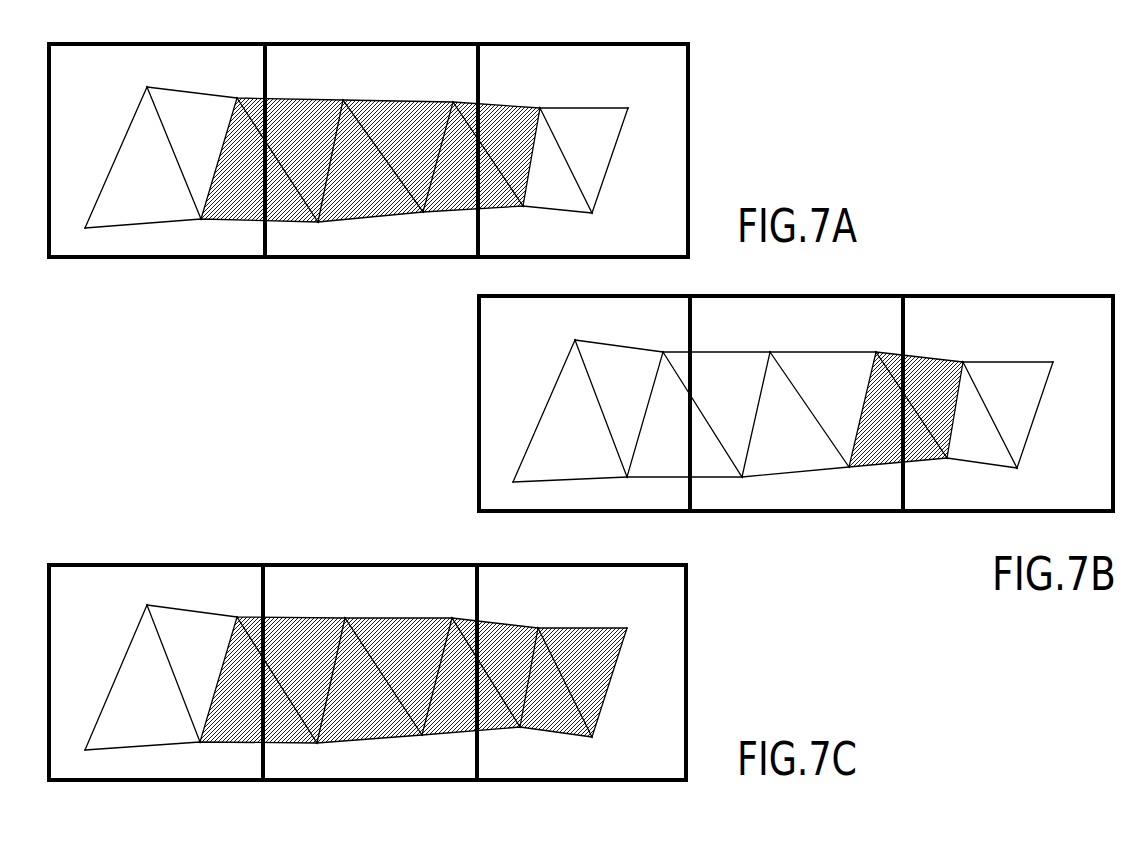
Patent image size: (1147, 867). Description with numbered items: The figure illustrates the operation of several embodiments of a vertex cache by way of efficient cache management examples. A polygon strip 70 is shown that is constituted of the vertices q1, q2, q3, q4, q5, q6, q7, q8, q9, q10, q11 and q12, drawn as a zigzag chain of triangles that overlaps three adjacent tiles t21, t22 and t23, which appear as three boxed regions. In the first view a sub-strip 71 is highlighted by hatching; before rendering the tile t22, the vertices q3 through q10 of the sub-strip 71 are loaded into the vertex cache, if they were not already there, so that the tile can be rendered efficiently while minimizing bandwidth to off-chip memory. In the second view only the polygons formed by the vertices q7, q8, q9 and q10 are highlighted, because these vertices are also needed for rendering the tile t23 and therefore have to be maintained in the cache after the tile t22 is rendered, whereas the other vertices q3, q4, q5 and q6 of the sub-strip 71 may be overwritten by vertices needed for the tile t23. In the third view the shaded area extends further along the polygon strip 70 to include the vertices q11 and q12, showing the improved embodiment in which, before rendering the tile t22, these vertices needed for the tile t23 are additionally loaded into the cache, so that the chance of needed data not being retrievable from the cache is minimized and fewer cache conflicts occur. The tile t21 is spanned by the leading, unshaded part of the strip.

In FIG. 7A, the polygon strip 70 is at (367, 197).
In FIG. 7B, the polygon strip 70 is at (744, 415).
In FIG. 7C, the polygon strip 70 is at (366, 717).
In FIG. 7A, the sub-strip 71 is at (390, 213).
In FIG. 7A, the tile t21 is at (157, 150).
In FIG. 7B, the tile t21 is at (584, 403).
In FIG. 7C, the tile t21 is at (156, 672).
In FIG. 7A, the tile t22 is at (371, 150).
In FIG. 7B, the tile t22 is at (796, 403).
In FIG. 7C, the tile t22 is at (370, 672).
In FIG. 7A, the tile t23 is at (583, 150).
In FIG. 7B, the tile t23 is at (1008, 403).
In FIG. 7C, the tile t23 is at (581, 672).
In FIG. 7A, the vertex q1 is at (80, 238).
In FIG. 7B, the vertex q1 is at (510, 493).
In FIG. 7C, the vertex q1 is at (80, 760).
In FIG. 7A, the vertex q2 is at (135, 81).
In FIG. 7B, the vertex q2 is at (564, 334).
In FIG. 7C, the vertex q2 is at (135, 600).
In FIG. 7A, the vertex q3 is at (197, 234).
In FIG. 7B, the vertex q3 is at (623, 490).
In FIG. 7C, the vertex q3 is at (195, 756).
In FIG. 7A, the vertex q4 is at (232, 85).
In FIG. 7B, the vertex q4 is at (658, 339).
In FIG. 7C, the vertex q4 is at (232, 604).
In FIG. 7A, the vertex q5 is at (322, 235).
In FIG. 7B, the vertex q5 is at (748, 490).
In FIG. 7C, the vertex q5 is at (320, 756).
In FIG. 7A, the vertex q6 is at (348, 86).
In FIG. 7B, the vertex q6 is at (775, 339).
In FIG. 7C, the vertex q6 is at (347, 605).
In FIG. 7A, the vertex q7 is at (430, 226).
In FIG. 7B, the vertex q7 is at (853, 481).
In FIG. 7C, the vertex q7 is at (428, 748).
In FIG. 7A, the vertex q8 is at (457, 88).
In FIG. 7B, the vertex q8 is at (880, 339).
In FIG. 7C, the vertex q8 is at (455, 606).
In FIG. 7A, the vertex q9 is at (527, 220).
In FIG. 7B, the vertex q9 is at (950, 472).
In FIG. 7C, the vertex q9 is at (525, 740).
In FIG. 7A, the vertex q10 is at (542, 96).
In FIG. 7B, the vertex q10 is at (967, 348).
In FIG. 7C, the vertex q10 is at (540, 615).
In FIG. 7A, the vertex q11 is at (595, 227).
In FIG. 7B, the vertex q11 is at (1018, 481).
In FIG. 7C, the vertex q11 is at (592, 750).
In FIG. 7A, the vertex q12 is at (645, 103).
In FIG. 7B, the vertex q12 is at (1070, 353).
In FIG. 7C, the vertex q12 is at (644, 621).